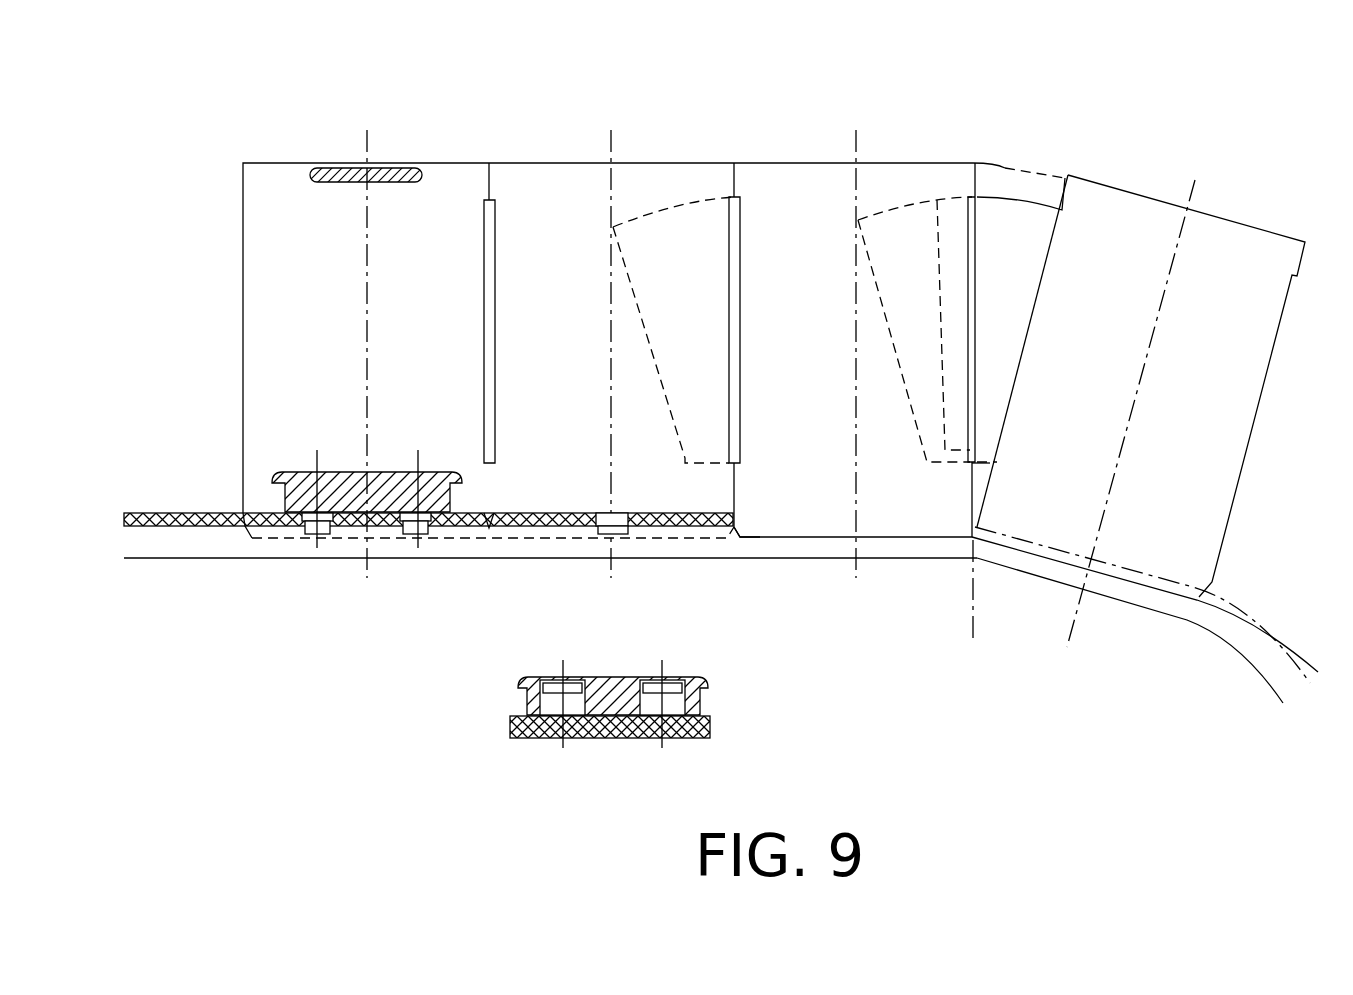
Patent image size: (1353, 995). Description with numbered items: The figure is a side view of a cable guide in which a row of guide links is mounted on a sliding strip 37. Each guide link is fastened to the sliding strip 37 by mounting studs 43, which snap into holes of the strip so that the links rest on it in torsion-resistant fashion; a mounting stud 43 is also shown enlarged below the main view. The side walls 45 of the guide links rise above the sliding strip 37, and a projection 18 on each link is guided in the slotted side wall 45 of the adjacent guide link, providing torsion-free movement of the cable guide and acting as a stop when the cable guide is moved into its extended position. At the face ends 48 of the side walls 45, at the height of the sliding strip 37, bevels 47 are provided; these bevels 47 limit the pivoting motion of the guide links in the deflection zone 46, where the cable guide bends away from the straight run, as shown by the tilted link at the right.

The projection 18 is at (682, 255).
The side wall 45 is at (548, 195).
The mounting stud 43 is at (603, 519).
The sliding strip 37 is at (672, 520).
The bevel 47 is at (742, 538).
The face end 48 is at (982, 487).
The deflection zone 46 is at (1122, 604).